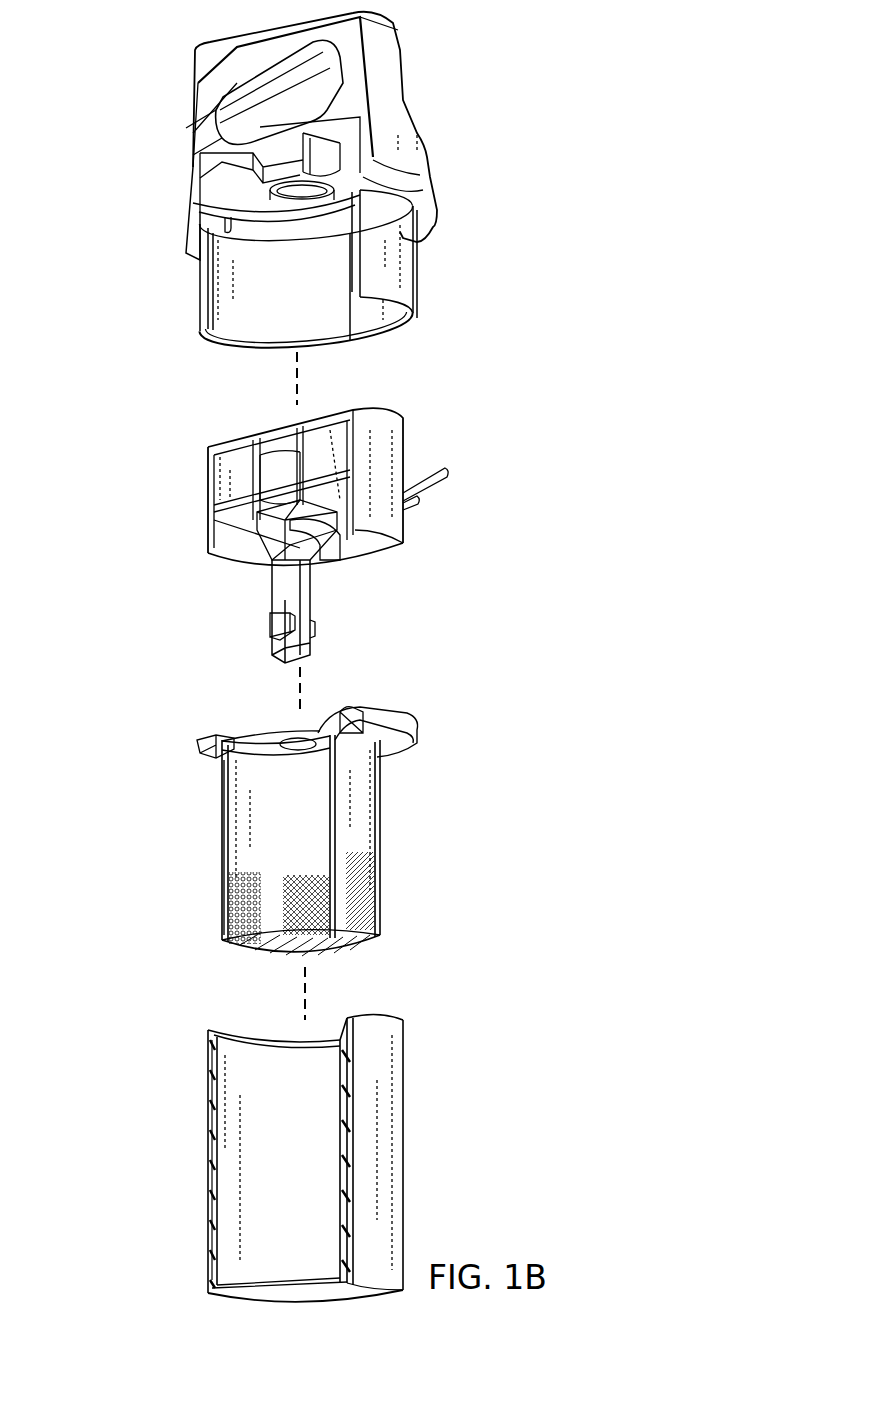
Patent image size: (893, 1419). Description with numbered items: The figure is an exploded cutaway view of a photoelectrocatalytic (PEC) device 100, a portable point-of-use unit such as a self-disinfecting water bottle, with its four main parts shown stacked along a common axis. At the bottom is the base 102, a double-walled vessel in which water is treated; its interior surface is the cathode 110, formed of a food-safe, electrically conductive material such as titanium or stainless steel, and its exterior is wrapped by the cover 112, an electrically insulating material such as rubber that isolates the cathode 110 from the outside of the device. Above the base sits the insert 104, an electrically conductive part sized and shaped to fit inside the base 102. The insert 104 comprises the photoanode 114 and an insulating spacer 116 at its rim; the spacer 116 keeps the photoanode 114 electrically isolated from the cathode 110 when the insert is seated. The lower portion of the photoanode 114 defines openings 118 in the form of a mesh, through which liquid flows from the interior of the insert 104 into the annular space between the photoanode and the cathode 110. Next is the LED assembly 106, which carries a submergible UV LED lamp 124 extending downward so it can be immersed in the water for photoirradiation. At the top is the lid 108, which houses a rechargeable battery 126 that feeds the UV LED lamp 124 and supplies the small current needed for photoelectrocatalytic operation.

The photoelectrocatalytic (PEC) device 100 is at (462, 60).
The base 102 is at (181, 1156).
The insert 104 is at (172, 902).
The LED assembly 106 is at (174, 470).
The lid 108 is at (150, 162).
The cathode 110 is at (209, 1068).
The cover 112 is at (209, 1225).
The photoanode 114 is at (221, 820).
The insulating spacer 116 is at (205, 741).
The openings 118 is at (381, 900).
The UV LED lamp 124 is at (270, 625).
The rechargeable battery 126 is at (218, 168).